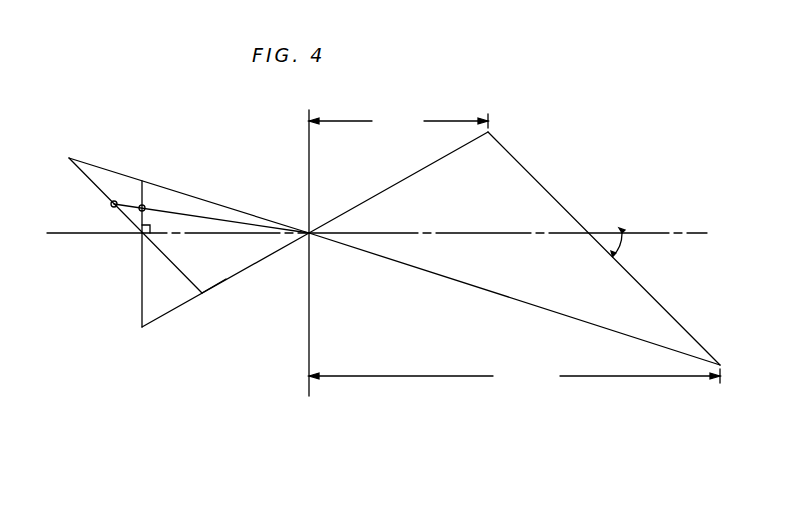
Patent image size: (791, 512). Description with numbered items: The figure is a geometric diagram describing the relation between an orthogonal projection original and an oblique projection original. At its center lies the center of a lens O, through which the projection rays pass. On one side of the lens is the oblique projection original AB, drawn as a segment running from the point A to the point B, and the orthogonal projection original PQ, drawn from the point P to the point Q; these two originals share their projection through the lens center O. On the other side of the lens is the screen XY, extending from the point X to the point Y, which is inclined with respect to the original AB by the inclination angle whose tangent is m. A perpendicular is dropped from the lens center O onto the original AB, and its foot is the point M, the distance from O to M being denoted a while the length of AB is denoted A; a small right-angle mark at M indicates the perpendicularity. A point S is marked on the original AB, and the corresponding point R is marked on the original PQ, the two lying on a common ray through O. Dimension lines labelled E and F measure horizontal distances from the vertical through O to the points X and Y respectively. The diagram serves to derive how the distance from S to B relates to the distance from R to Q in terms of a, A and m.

The endpoint of orthogonal projection original PQ P is at (179, 190).
The endpoint of oblique projection original AB A is at (139, 192).
The point on the original AB S is at (146, 206).
The point on the original PQ R is at (189, 225).
The foot of perpendicular M is at (127, 244).
The endpoint of oblique projection original AB B is at (222, 293).
The endpoint of orthogonal projection original PQ Q is at (214, 299).
The center of a lens O is at (377, 253).
The endpoint of screen XY X is at (514, 238).
The endpoint of screen XY Y is at (521, 299).
The distance E is at (398, 121).
The distance F is at (514, 376).